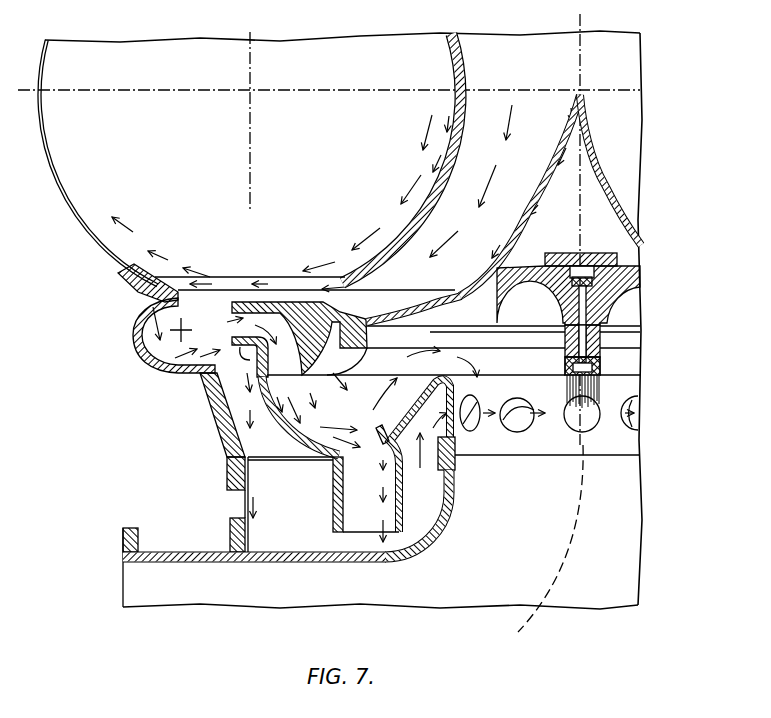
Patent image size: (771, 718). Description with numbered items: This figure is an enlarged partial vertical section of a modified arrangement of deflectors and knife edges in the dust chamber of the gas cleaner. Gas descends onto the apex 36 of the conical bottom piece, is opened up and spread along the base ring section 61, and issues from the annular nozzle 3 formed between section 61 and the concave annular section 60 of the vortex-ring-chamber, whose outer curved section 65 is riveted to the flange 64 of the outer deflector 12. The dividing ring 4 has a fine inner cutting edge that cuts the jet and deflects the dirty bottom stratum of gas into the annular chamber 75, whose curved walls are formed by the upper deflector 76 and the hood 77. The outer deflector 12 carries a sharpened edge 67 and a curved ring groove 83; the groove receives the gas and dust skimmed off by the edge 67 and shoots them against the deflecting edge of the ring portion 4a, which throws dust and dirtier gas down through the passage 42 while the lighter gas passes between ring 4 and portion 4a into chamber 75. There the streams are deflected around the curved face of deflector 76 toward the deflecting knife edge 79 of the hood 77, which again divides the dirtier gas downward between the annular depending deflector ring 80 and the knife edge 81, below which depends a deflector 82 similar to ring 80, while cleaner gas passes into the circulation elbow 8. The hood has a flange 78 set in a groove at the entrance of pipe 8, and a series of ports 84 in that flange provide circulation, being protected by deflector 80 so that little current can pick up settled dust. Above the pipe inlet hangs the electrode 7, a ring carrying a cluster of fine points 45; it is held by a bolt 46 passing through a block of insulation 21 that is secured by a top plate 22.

The outer curved section 65 is at (75, 217).
The annular section 60 is at (426, 222).
The flange 64 is at (125, 281).
The sharpened edge 67 is at (180, 293).
The curved ring groove 83 is at (148, 368).
The dividing ring 4 is at (286, 306).
The ring portion 4a is at (248, 361).
The annular nozzle 3 is at (397, 286).
The base ring section 61 is at (480, 288).
The apex 36 is at (590, 133).
The block of insulation 21 is at (603, 328).
The top plate 22 is at (588, 253).
The bolt 46 is at (565, 352).
The electrode 7 is at (600, 370).
The points 45 is at (601, 384).
The ports 84 is at (645, 410).
The outer deflector 12 is at (227, 433).
The passage 42 is at (240, 403).
The upper deflector 76 is at (291, 429).
The annular chamber 75 is at (337, 410).
The hood 77 is at (437, 378).
The deflecting knife edge 79 is at (388, 437).
The flange 78 is at (456, 448).
The annular depending deflector ring 80 is at (436, 513).
The circulation elbow 8 is at (293, 564).
The knife edge 81 is at (330, 463).
The deflector 82 is at (335, 514).